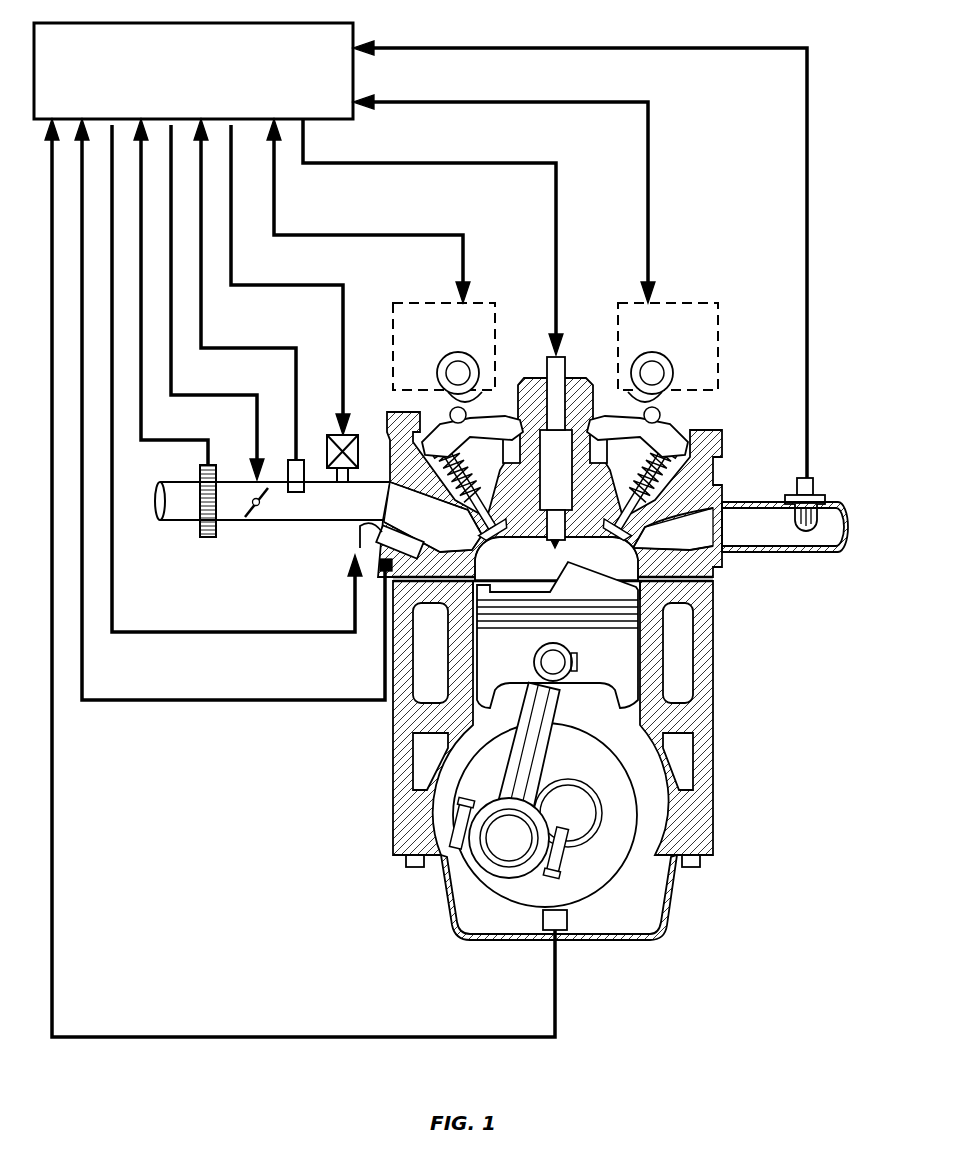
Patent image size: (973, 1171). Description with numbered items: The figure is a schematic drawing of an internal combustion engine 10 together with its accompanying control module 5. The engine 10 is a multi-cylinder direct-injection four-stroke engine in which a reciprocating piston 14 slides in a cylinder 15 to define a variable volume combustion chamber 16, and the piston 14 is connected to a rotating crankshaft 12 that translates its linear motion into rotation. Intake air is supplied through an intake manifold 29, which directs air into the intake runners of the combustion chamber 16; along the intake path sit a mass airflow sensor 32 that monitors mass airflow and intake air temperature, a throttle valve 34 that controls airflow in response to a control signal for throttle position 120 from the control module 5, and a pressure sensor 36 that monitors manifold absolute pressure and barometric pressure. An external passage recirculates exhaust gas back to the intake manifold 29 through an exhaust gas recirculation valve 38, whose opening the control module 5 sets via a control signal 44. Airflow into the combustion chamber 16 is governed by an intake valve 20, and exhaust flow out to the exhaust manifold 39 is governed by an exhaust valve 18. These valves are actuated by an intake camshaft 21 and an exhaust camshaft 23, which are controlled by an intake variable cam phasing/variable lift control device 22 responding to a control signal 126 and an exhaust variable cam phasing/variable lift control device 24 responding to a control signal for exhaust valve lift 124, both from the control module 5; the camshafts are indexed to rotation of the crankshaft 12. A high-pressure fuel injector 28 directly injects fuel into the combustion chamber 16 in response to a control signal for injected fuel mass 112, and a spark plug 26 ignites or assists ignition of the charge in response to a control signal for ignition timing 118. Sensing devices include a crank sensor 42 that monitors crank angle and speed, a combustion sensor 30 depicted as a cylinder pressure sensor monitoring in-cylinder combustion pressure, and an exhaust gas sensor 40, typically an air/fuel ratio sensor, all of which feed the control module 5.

The control module 5 is at (197, 89).
The internal combustion engine 10 is at (716, 712).
The crankshaft 12 is at (613, 878).
The piston 14 is at (613, 672).
The cylinder 15 is at (640, 596).
The combustion chamber 16 is at (527, 583).
The exhaust valve 18 is at (628, 543).
The intake valve 20 is at (475, 532).
The intake camshaft 21 is at (458, 373).
The intake variable cam phasing/variable lift control device 22 is at (431, 338).
The exhaust camshaft 23 is at (653, 373).
The exhaust variable cam phasing/variable lift control device 24 is at (701, 338).
The spark plug 26 is at (560, 360).
The fuel injector 28 is at (353, 538).
The intake manifold 29 is at (371, 490).
The combustion sensor 30 is at (384, 574).
The mass airflow sensor 32 is at (208, 537).
The throttle valve 34 is at (256, 520).
The pressure sensor 36 is at (296, 494).
The exhaust gas recirculation valve 38 is at (338, 470).
The exhaust manifold 39 is at (750, 502).
The exhaust gas sensor 40 is at (820, 495).
The crank sensor 42 is at (545, 925).
The control signal 44 is at (302, 280).
The control signal for injected fuel mass 112 is at (257, 625).
The control signal for ignition timing 118 is at (492, 157).
The control signal for throttle position 120 is at (235, 388).
The control signal for exhaust valve lift 124 is at (594, 95).
The control signal 126 is at (415, 227).